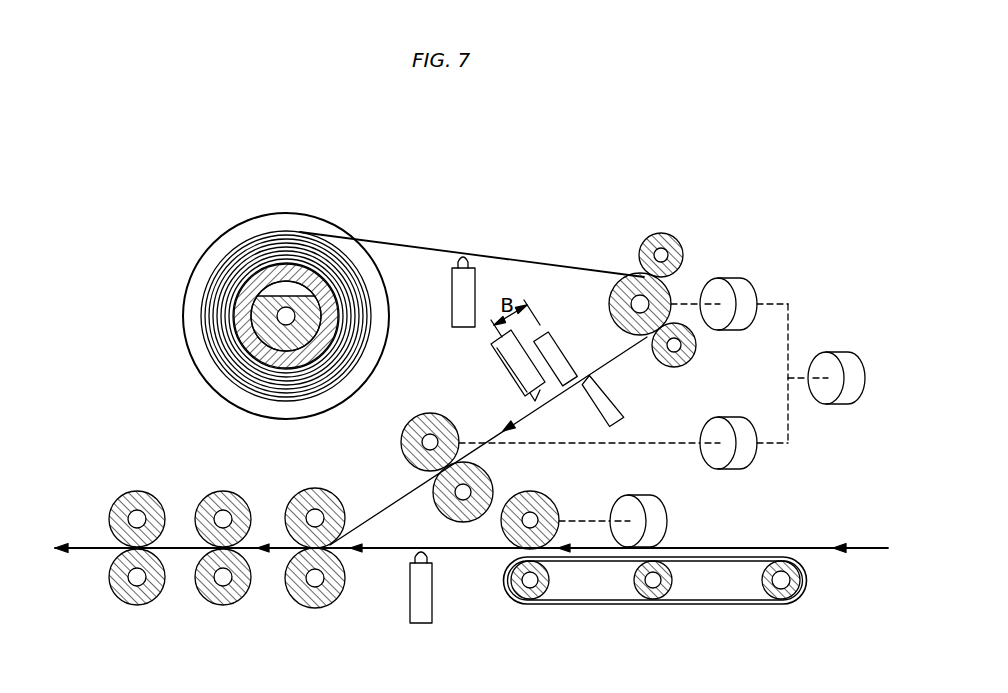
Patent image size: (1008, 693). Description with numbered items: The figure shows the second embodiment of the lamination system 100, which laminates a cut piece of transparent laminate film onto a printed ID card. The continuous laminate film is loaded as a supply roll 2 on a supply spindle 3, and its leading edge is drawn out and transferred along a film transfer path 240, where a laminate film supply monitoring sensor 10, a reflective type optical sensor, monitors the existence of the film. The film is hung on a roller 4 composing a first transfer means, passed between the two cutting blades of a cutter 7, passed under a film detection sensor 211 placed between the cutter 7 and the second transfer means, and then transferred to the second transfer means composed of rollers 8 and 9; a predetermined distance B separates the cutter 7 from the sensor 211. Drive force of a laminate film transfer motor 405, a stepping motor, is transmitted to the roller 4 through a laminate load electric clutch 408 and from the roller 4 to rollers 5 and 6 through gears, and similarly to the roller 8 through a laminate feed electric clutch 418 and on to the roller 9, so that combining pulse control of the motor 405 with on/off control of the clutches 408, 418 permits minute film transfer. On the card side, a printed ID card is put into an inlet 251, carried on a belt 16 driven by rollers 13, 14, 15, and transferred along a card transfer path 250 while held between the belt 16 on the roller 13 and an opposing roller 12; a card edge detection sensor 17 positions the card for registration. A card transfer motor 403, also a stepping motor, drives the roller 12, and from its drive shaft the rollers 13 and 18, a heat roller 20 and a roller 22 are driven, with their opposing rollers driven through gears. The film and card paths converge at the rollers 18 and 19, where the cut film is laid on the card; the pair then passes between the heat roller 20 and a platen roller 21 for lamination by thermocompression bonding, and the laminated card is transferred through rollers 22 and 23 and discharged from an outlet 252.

The lamination system 100 is at (147, 207).
The supply roll 2 is at (270, 243).
The supply spindle 3 is at (208, 252).
The film transfer path 240 is at (508, 255).
The laminate film supply monitoring sensor 10 is at (450, 295).
The film detection sensor 211 is at (506, 364).
The cutter 7 is at (612, 397).
The roller 4 is at (610, 298).
The roller 5 is at (676, 245).
The roller 6 is at (694, 352).
The laminate load electric clutch 408 is at (748, 283).
The laminate film transfer motor 405 is at (839, 352).
The laminate feed electric clutch 418 is at (748, 460).
The card transfer motor 403 is at (668, 513).
The roller 8 is at (428, 415).
The roller 9 is at (478, 470).
The roller 12 is at (550, 498).
The card transfer path 250 is at (463, 552).
The inlet 251 is at (860, 550).
The outlet 252 is at (79, 545).
The card edge detection sensor 17 is at (421, 625).
The belt 16 is at (588, 609).
The roller 13 is at (533, 601).
The roller 14 is at (656, 601).
The roller 15 is at (786, 602).
The roller 18 is at (313, 491).
The roller 19 is at (323, 607).
The heat roller 20 is at (225, 491).
The platen roller 21 is at (236, 607).
The roller 22 is at (136, 491).
The roller 23 is at (147, 607).